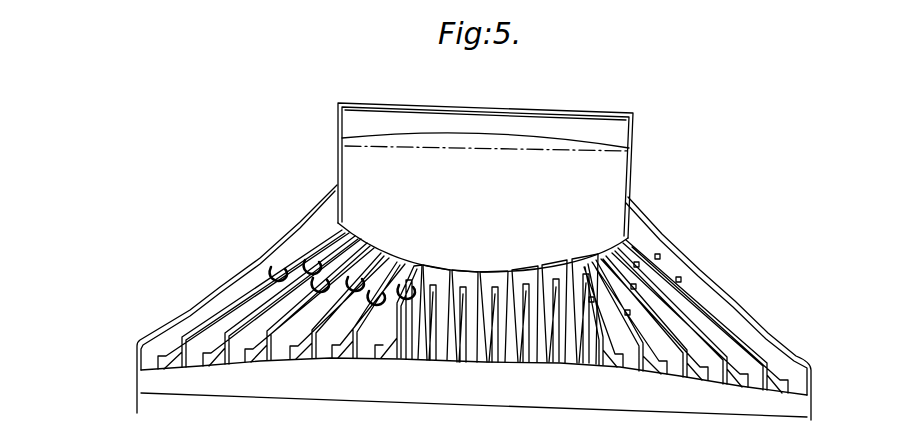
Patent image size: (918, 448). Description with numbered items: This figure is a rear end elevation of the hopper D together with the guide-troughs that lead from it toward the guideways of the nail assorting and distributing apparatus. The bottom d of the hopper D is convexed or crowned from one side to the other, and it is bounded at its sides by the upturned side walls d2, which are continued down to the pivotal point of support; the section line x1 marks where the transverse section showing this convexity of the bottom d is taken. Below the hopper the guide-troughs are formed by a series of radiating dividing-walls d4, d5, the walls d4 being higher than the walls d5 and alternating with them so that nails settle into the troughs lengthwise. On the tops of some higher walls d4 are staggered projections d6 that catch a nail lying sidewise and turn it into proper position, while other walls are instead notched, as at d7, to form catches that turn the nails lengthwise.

The bottom of the hopper d is at (485, 187).
The side walls d2 is at (417, 103).
The hopper D is at (571, 108).
The section line x' x' x1 is at (345, 146).
The higher dividing-walls d4 is at (702, 322).
The lower dividing-walls d5 is at (540, 365).
The projections d6 is at (562, 265).
The notches d7 is at (280, 272).